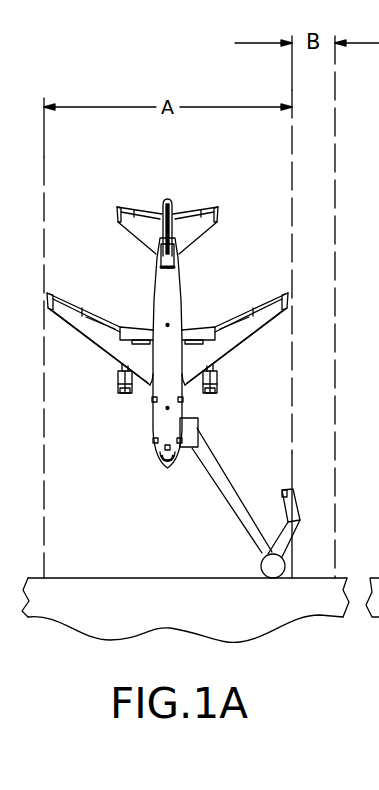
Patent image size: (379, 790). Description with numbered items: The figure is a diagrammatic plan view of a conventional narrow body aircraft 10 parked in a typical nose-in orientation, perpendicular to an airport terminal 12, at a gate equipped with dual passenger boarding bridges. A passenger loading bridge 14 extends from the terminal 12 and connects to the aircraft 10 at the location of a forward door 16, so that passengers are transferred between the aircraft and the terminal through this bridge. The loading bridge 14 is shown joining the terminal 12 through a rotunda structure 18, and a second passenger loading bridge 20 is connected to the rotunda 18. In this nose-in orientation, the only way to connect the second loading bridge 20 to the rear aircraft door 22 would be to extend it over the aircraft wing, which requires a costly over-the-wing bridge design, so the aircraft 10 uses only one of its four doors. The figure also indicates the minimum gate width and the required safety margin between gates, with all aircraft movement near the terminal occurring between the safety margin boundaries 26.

The narrow body aircraft 10 is at (167, 333).
The terminal 12 is at (87, 568).
The passenger loading bridge 14 is at (228, 500).
The forward door 16 is at (175, 423).
The rotunda structure 18 is at (267, 565).
The second passenger loading bridge 20 is at (283, 492).
The rear aircraft door 22 is at (182, 272).
The safety margin boundaries 26 is at (44, 191).